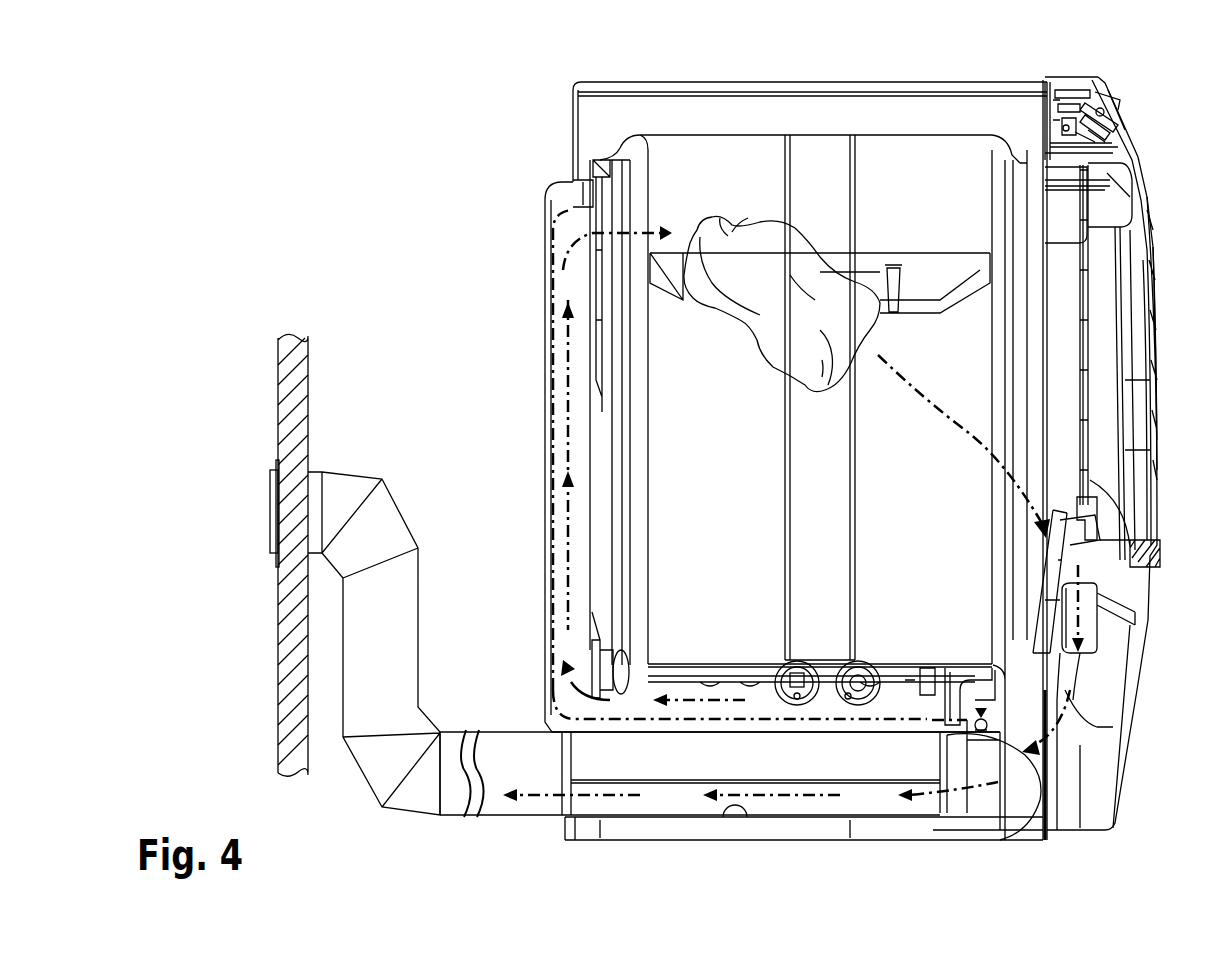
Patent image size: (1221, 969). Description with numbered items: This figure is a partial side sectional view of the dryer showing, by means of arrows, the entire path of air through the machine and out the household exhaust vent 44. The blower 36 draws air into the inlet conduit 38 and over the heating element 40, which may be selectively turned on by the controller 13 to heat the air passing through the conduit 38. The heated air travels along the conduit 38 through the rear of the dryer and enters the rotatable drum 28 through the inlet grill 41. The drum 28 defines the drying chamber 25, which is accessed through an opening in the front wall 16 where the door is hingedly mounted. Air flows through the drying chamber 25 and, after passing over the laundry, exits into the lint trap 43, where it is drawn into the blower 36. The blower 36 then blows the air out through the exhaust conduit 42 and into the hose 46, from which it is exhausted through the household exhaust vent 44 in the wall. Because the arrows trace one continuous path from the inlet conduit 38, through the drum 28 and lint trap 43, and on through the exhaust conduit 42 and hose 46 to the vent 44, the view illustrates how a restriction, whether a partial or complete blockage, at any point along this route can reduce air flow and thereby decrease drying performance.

The controller 13 is at (1040, 147).
The front wall 16 is at (1128, 708).
The drying chamber 25 is at (730, 511).
The rotatable drum 28 is at (752, 133).
The blower 36 is at (1020, 788).
The inlet conduit 38 is at (560, 603).
The heating element 40 is at (802, 698).
The inlet grill 41 is at (602, 287).
The exhaust conduit 42 is at (663, 798).
The lint trap 43 is at (1063, 533).
The household exhaust vent 44 is at (265, 495).
The hose 46 is at (375, 762).